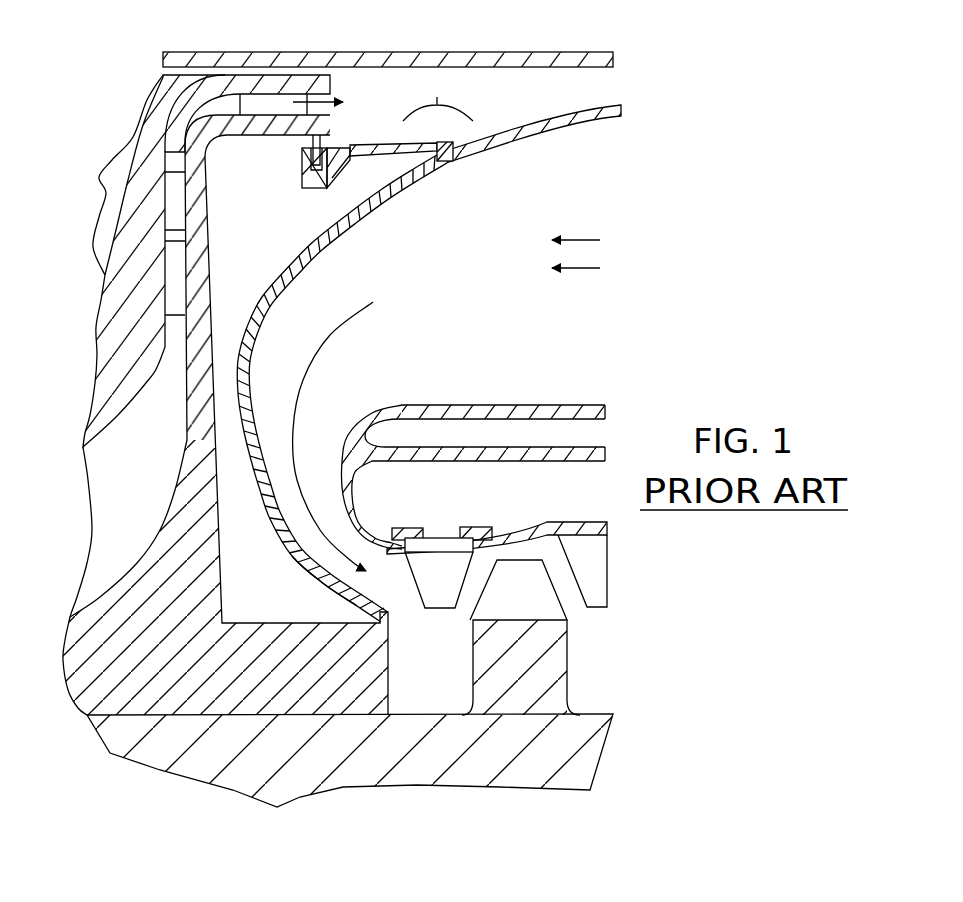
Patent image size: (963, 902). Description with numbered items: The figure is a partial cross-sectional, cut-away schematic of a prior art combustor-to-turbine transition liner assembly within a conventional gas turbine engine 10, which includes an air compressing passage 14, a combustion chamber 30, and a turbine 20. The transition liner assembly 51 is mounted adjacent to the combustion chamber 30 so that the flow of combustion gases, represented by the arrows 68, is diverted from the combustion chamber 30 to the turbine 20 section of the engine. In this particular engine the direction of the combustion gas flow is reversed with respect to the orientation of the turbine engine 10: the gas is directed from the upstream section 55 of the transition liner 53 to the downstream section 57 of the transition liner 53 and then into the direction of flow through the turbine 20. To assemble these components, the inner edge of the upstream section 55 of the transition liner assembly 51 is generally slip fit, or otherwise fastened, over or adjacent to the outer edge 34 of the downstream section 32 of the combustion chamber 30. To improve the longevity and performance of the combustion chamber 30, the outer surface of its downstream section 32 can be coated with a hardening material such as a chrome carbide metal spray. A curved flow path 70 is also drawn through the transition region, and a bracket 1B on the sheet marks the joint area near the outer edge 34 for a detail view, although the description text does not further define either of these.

The gas turbine engine 10 is at (131, 67).
The air compressing passage 14 is at (145, 494).
The turbine 20 is at (530, 602).
The combustion chamber 30 is at (550, 368).
The downstream section of the combustion chamber 32 is at (500, 135).
The outer edge of the combustion chamber downstream section 34 is at (458, 140).
The transition liner assembly 51 is at (370, 224).
The transition liner 53 is at (248, 327).
The upstream section of the transition liner 55 is at (420, 174).
The downstream section of the transition liner 57 is at (325, 592).
The arrows representing the flow of combustion gases 68 is at (577, 268).
The combustion gas flow path 70 is at (308, 372).
The detail view callout 1B is at (438, 95).